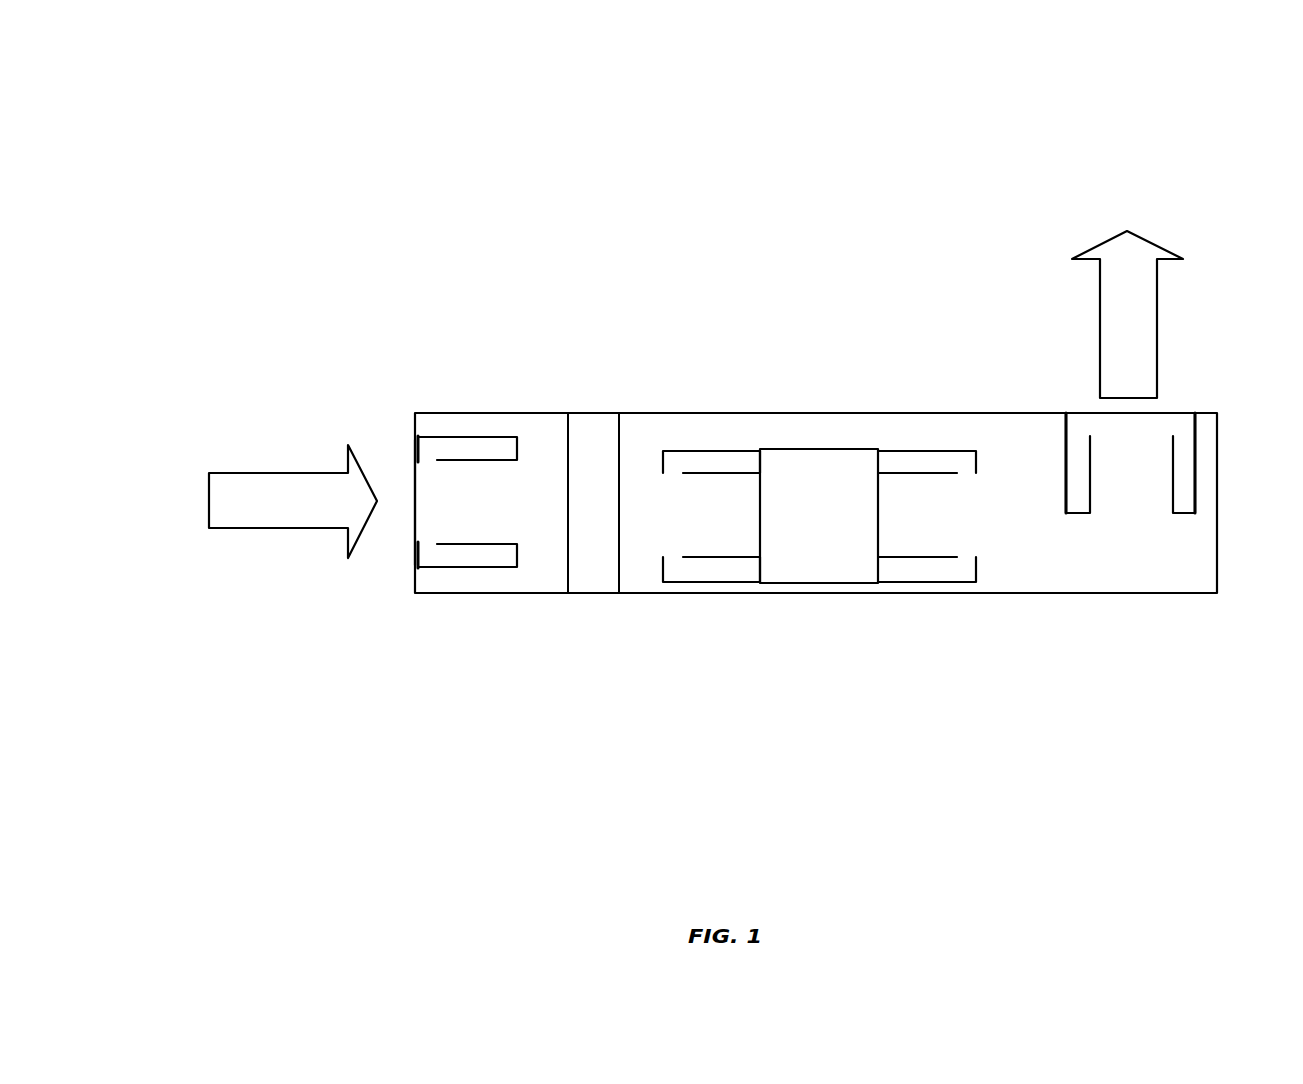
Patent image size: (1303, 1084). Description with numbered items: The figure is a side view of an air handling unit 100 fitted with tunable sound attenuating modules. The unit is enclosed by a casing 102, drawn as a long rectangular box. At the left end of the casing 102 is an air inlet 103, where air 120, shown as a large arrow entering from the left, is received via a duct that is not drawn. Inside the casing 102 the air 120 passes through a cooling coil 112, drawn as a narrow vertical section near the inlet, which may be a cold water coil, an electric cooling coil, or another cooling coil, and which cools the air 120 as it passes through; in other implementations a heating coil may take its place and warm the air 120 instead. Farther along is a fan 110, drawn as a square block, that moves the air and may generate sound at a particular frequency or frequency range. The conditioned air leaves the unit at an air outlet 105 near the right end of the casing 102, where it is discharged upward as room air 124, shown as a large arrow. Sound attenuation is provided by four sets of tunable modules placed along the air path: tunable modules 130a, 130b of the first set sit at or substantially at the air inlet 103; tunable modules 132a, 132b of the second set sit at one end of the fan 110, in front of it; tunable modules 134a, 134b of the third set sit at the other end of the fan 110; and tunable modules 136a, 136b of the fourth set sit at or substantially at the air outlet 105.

The air handling unit 100 is at (207, 123).
The casing 102 is at (553, 412).
The air inlet 103 is at (404, 470).
The air outlet 105 is at (1083, 398).
The fan 110 is at (817, 587).
The cooling coil 112 is at (590, 592).
The air 120 is at (209, 472).
The room air 124 is at (1177, 259).
The tunable module 130a is at (472, 437).
The tunable module 130b is at (465, 567).
The tunable module 132a is at (720, 448).
The tunable module 132b is at (713, 583).
The tunable module 134a is at (937, 450).
The tunable module 134b is at (930, 590).
The tunable module 136a is at (1062, 412).
The tunable module 136b is at (1194, 483).